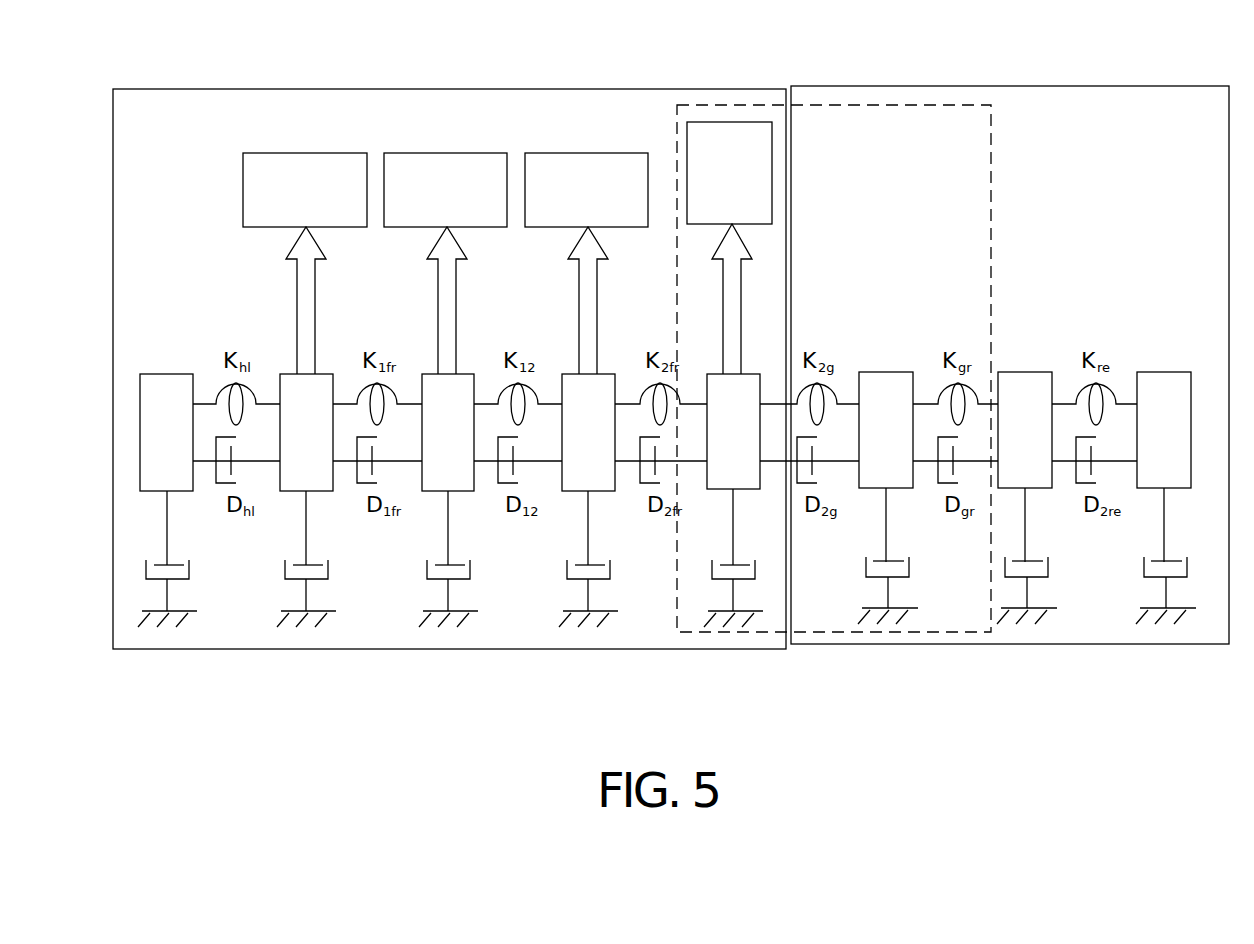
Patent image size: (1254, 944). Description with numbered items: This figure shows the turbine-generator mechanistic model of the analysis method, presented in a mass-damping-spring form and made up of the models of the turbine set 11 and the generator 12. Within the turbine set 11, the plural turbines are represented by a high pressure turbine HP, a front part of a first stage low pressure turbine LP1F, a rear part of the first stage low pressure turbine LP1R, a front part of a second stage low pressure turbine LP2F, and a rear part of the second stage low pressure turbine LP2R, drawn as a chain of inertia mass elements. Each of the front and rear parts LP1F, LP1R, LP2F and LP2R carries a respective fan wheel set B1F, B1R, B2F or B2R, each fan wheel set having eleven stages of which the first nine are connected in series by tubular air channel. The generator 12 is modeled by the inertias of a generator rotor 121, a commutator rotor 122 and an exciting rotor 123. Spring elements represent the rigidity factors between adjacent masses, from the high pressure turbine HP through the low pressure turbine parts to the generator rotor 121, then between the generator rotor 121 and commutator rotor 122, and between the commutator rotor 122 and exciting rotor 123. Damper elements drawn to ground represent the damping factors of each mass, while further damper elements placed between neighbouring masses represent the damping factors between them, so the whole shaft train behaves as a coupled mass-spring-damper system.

The turbine set 11 is at (224, 89).
The generator 12 is at (1077, 88).
The fan wheel set B1F is at (317, 155).
The fan wheel set B1R is at (450, 157).
The fan wheel set B2F is at (588, 157).
The fan wheel set B2R is at (723, 123).
The high pressure turbine HP is at (167, 632).
The front part of first stage low pressure turbine LP1F is at (306, 632).
The rear part of first stage low pressure turbine LP1R is at (448, 632).
The front part of second stage low pressure turbine LP2F is at (588, 632).
The rear part of second stage low pressure turbine LP2R is at (733, 632).
The generator rotor 121 is at (887, 630).
The commutator rotor 122 is at (1020, 630).
The exciting rotor 123 is at (1163, 630).